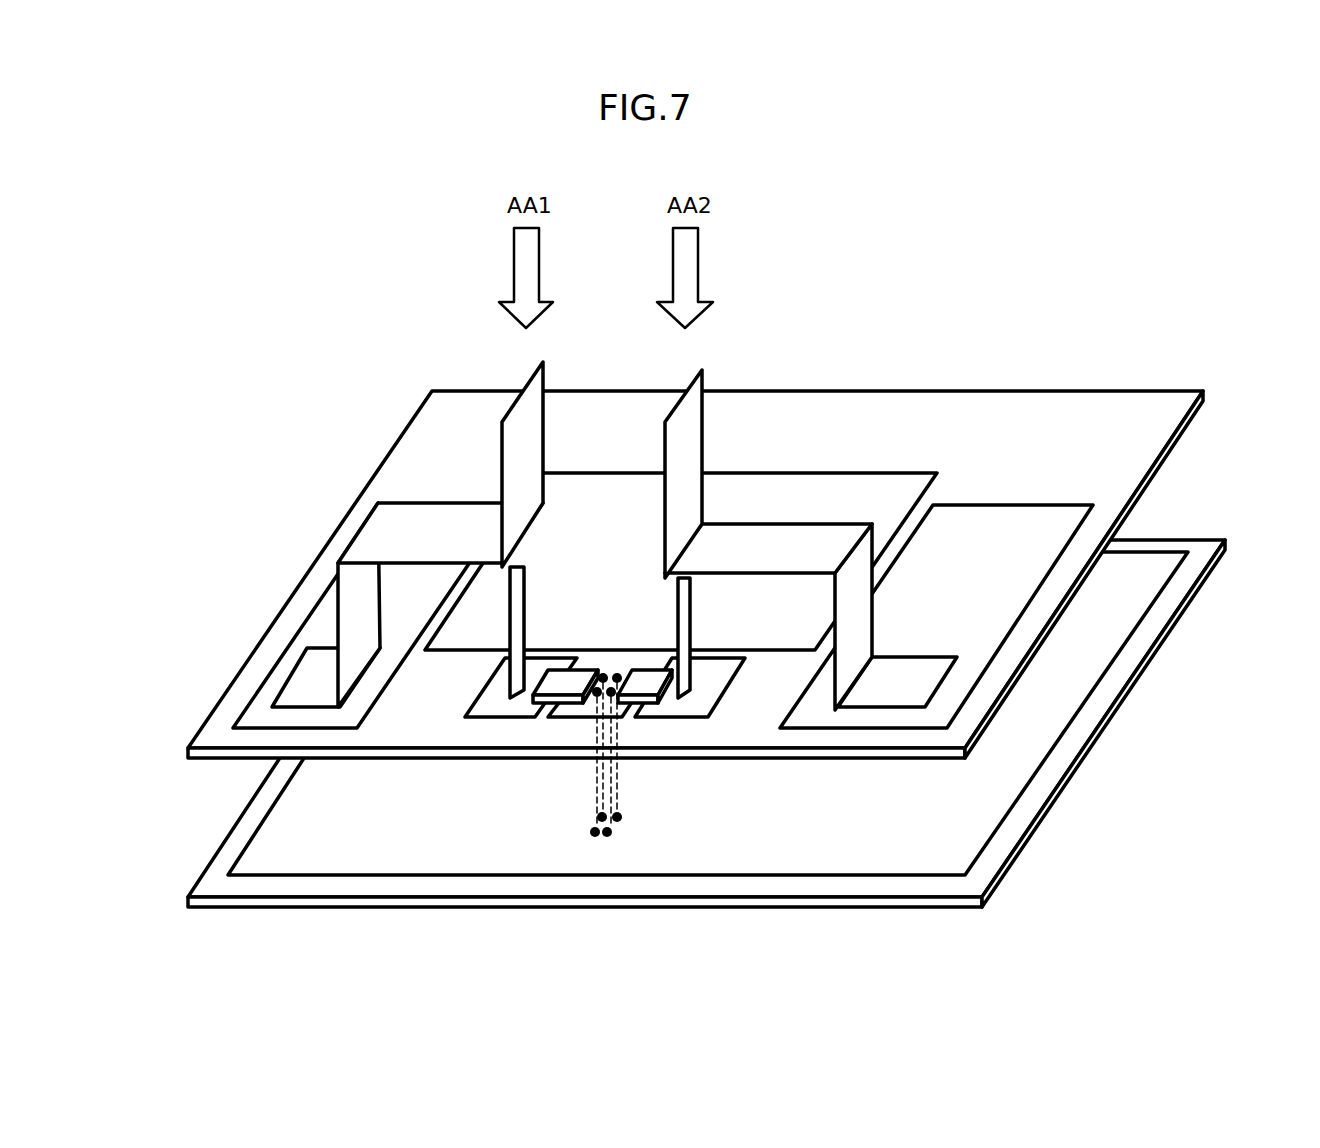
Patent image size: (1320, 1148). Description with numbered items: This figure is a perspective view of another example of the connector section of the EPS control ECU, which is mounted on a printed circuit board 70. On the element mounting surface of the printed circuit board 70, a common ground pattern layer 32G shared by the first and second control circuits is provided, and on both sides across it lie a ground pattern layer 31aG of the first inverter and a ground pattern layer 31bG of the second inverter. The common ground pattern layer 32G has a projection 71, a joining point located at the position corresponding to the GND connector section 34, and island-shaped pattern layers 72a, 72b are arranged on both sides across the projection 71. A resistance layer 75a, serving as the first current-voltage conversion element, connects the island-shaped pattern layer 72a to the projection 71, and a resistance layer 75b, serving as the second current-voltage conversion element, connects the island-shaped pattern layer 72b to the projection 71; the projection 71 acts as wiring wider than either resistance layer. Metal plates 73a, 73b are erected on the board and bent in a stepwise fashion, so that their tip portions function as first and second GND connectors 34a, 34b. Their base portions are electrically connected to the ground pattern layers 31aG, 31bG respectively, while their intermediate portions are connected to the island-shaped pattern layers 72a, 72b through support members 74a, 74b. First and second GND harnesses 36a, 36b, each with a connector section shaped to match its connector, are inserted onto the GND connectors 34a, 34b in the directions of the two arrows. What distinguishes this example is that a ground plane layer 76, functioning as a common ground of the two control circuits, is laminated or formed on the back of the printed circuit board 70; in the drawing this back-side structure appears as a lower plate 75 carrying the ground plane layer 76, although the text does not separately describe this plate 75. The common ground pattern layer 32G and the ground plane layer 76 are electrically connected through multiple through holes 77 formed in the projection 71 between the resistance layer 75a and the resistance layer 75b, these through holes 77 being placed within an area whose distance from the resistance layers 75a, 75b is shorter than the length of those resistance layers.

The GND connector section 34 is at (425, 264).
The first GND connector 34a is at (502, 408).
The second GND connector 34b is at (690, 423).
The first GND harness 36a is at (523, 265).
The second GND harness 36b is at (681, 265).
The printed circuit board 70 is at (1160, 472).
The lower substrate 75 is at (1072, 768).
The ground plane layer 76 is at (1062, 737).
The common ground pattern layer 32G is at (733, 492).
The ground pattern layer of first inverter 31aG is at (290, 607).
The ground pattern layer of second inverter 31bG is at (985, 613).
The metal plate 73a is at (442, 522).
The metal plate 73b is at (760, 533).
The support member 74a is at (515, 602).
The support member 74b is at (687, 616).
The island-shaped pattern layer 72a is at (497, 702).
The island-shaped pattern layer 72b is at (683, 707).
The projection 71 is at (587, 707).
The resistance layer 75a is at (560, 690).
The resistance layer 75b is at (648, 686).
The through holes 77 is at (626, 826).